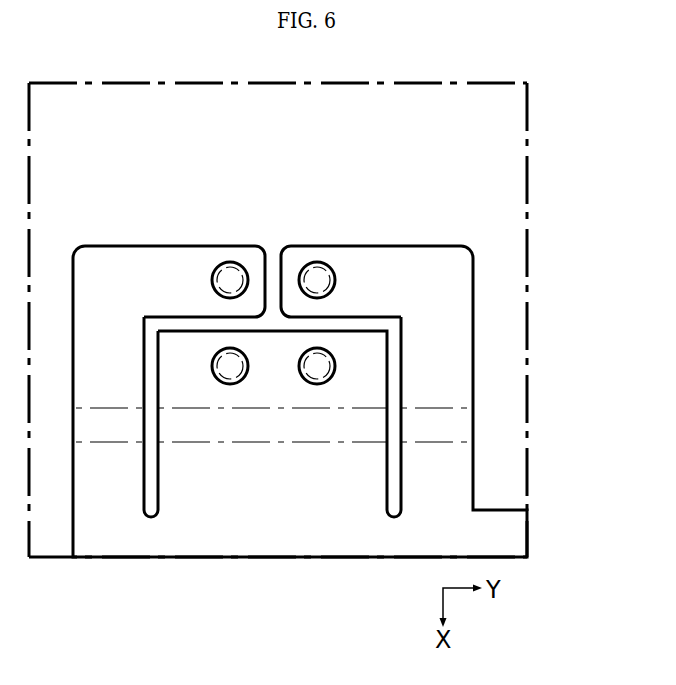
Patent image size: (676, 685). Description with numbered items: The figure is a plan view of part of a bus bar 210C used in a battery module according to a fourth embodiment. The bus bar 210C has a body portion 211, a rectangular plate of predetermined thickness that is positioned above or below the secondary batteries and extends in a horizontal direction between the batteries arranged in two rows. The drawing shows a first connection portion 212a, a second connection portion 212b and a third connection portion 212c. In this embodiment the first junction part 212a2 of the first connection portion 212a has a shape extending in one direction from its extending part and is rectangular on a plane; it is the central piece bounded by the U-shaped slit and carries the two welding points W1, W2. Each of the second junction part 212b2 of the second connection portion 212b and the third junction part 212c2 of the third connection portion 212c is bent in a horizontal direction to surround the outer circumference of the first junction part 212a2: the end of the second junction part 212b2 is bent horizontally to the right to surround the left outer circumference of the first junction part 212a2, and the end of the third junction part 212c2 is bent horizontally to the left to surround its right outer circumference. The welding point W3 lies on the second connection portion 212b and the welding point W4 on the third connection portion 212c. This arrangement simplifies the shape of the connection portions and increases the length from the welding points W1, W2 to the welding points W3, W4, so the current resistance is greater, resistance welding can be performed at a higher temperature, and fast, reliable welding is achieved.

The bus bar 210C is at (130, 138).
The body portion 211 is at (513, 533).
The first connection portion 212a is at (272, 190).
The first junction part 212a2 is at (268, 350).
The second connection portion 212b is at (161, 193).
The second junction part 212b2 is at (145, 258).
The third connection portion 212c is at (410, 190).
The third junction part 212c2 is at (412, 258).
The welding point W1 is at (230, 378).
The welding point W2 is at (317, 378).
The welding point W3 is at (228, 279).
The welding point W4 is at (318, 279).